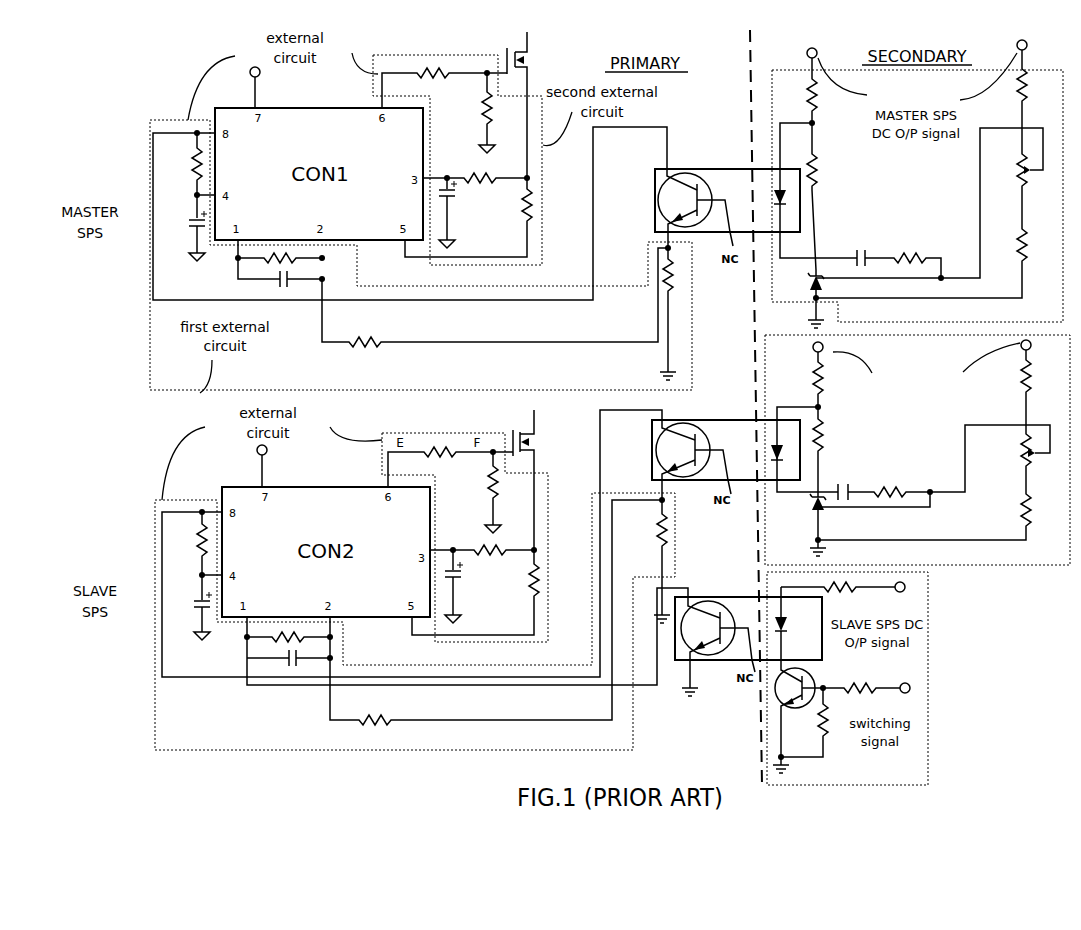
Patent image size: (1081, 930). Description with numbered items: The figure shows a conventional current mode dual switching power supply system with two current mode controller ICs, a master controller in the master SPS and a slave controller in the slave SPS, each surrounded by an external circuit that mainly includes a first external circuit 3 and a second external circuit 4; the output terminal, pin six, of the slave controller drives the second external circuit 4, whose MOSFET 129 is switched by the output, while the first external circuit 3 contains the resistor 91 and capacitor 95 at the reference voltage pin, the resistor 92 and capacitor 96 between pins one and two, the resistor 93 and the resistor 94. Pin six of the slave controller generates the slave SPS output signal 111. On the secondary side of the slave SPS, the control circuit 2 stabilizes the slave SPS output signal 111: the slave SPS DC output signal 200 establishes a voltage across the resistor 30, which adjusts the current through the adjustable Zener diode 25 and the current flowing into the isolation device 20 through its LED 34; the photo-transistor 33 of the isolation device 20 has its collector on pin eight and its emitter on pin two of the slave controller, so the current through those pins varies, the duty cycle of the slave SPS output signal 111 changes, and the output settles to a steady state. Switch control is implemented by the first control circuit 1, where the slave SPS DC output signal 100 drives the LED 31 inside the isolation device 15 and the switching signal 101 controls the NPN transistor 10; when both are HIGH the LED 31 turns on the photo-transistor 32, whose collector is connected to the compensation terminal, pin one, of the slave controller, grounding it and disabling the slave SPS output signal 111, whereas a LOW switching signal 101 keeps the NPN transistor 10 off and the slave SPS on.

The first control circuit 1 is at (928, 725).
The control circuit 2 is at (993, 562).
The first external circuit 3 is at (176, 752).
The second external circuit 4 is at (498, 433).
The NPN transistor 10 is at (799, 710).
The isolation device 15 is at (738, 633).
The isolation device 20 is at (708, 444).
The adjustable Zener diode 25 is at (819, 508).
The resistor 30 is at (1034, 376).
The LED 31 is at (791, 625).
The photo-transistor 32 is at (690, 641).
The photo-transistor 33 is at (657, 458).
The light emitting diode 34 is at (781, 447).
The resistor 91 is at (190, 543).
The resistor 92 is at (288, 629).
The resistor 93 is at (508, 612).
The resistor 94 is at (653, 561).
The capacitor 95 is at (193, 607).
The capacitor 96 is at (288, 666).
The slave SPS DC output signal 100 is at (862, 597).
The switching (ON/OFF) signal 101 is at (866, 698).
The slave SPS output signal 111 is at (388, 463).
The MOSFET 129 is at (535, 485).
The slave SPS DC output signal 200 is at (910, 448).